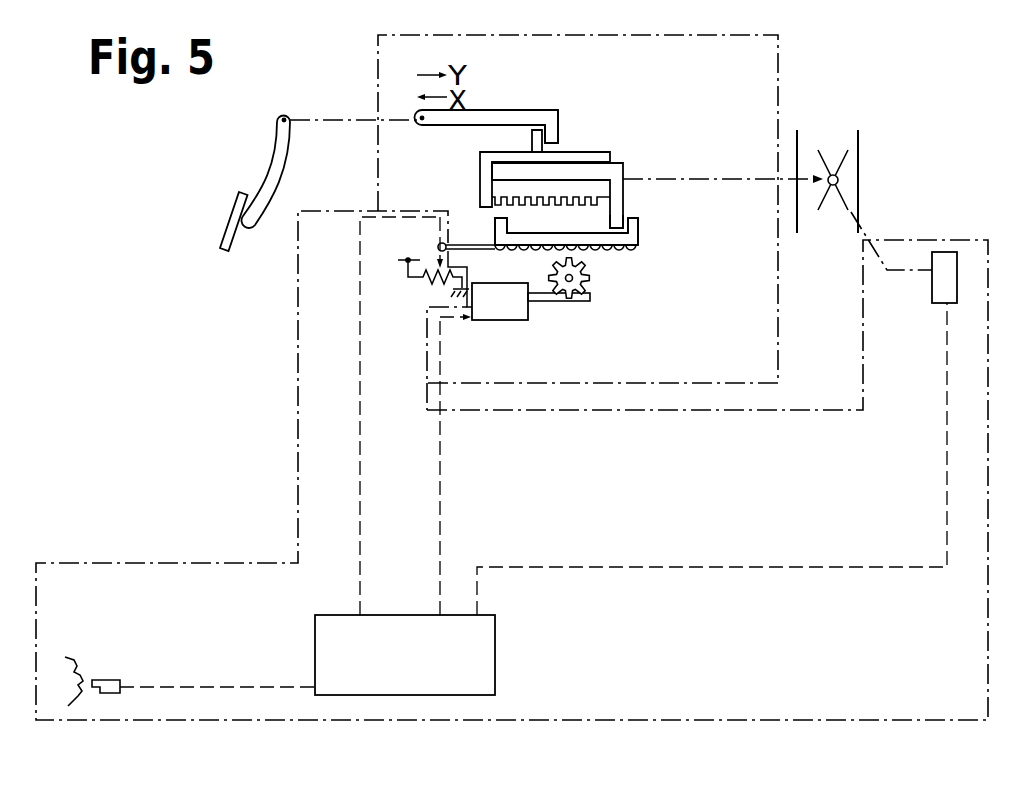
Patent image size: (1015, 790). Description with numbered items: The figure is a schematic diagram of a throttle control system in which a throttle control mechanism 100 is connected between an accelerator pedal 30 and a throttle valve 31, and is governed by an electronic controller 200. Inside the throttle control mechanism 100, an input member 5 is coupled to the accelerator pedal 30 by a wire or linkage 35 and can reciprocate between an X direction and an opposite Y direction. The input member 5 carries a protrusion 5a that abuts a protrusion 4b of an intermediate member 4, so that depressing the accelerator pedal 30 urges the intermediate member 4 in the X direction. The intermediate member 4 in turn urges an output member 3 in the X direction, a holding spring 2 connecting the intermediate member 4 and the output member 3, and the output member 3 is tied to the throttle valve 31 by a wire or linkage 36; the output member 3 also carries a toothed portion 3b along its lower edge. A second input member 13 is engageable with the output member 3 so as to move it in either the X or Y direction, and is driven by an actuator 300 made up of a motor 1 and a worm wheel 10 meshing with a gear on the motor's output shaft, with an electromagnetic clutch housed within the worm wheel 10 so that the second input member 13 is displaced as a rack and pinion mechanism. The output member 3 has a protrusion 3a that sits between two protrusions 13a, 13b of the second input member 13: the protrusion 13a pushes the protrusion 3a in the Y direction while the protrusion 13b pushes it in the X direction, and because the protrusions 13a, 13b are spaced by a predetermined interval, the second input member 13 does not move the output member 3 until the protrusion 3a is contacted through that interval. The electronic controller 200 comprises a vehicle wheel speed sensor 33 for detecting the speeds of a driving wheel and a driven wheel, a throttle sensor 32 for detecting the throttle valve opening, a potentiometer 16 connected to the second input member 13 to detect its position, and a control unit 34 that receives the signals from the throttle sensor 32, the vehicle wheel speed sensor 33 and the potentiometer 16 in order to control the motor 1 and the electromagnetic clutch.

The motor 1 is at (503, 312).
The holding spring 2 is at (566, 198).
The output member 3 is at (617, 175).
The protrusion 3a is at (624, 218).
The rack teeth 3b is at (505, 177).
The intermediate member 4 is at (483, 157).
The protrusion 4b is at (540, 147).
The input member 5 is at (483, 108).
The protrusion 5a is at (552, 135).
The worm wheel 10 is at (567, 299).
The second input member 13 is at (637, 244).
The protrusion 13a is at (498, 218).
The protrusion 13b is at (640, 222).
The potentiometer 16 is at (432, 282).
The accelerator pedal 30 is at (218, 214).
The throttle valve 31 is at (852, 172).
The throttle sensor 32 is at (938, 287).
The vehicle wheel speed sensor 33 is at (108, 680).
The control unit 34 is at (488, 647).
The wire or linkage 35 is at (332, 113).
The wire or linkage 36 is at (734, 177).
The throttle control mechanism 100 is at (780, 45).
The electronic controller 200 is at (912, 240).
The actuator 300 is at (585, 307).